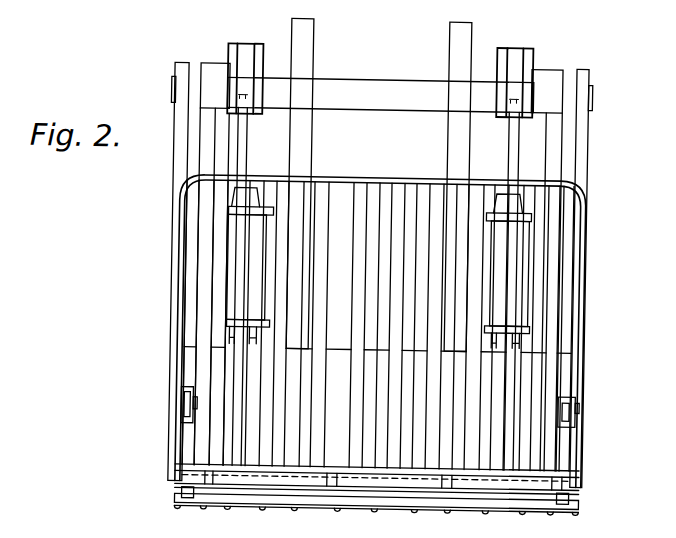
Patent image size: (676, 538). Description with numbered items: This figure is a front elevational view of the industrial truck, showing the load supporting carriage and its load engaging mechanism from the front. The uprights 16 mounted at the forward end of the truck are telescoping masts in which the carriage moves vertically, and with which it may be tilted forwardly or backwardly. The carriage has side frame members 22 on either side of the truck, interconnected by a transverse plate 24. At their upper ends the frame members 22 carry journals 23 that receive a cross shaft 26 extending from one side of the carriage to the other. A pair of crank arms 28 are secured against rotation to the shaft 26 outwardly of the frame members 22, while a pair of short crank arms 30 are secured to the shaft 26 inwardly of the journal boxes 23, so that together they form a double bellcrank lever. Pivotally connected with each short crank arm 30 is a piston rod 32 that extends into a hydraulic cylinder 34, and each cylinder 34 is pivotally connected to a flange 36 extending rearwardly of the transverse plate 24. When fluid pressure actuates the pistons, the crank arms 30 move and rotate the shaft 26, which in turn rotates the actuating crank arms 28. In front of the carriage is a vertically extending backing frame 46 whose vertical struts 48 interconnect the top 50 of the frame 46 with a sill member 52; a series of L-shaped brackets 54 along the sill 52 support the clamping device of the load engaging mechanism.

The uprights 16 is at (304, 23).
The side frame members 22 is at (191, 170).
The journals 23 is at (208, 76).
The transverse plate 24 is at (535, 367).
The cross shaft 26 is at (370, 88).
The crank arms 28 is at (176, 75).
The short crank arms 30 is at (241, 58).
The piston rod 32 is at (240, 152).
The hydraulic cylinder 34 is at (255, 254).
The flange 36 is at (251, 349).
The backing frame 46 is at (592, 210).
The vertical struts 48 is at (320, 301).
The top 50 is at (388, 178).
The sill member 52 is at (398, 480).
The L-shaped brackets 54 is at (216, 486).